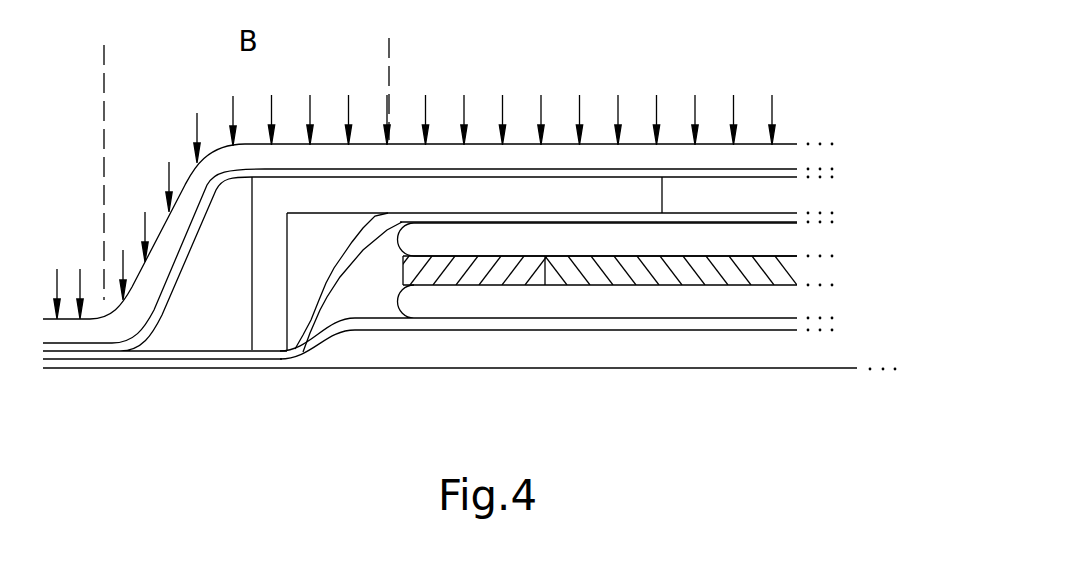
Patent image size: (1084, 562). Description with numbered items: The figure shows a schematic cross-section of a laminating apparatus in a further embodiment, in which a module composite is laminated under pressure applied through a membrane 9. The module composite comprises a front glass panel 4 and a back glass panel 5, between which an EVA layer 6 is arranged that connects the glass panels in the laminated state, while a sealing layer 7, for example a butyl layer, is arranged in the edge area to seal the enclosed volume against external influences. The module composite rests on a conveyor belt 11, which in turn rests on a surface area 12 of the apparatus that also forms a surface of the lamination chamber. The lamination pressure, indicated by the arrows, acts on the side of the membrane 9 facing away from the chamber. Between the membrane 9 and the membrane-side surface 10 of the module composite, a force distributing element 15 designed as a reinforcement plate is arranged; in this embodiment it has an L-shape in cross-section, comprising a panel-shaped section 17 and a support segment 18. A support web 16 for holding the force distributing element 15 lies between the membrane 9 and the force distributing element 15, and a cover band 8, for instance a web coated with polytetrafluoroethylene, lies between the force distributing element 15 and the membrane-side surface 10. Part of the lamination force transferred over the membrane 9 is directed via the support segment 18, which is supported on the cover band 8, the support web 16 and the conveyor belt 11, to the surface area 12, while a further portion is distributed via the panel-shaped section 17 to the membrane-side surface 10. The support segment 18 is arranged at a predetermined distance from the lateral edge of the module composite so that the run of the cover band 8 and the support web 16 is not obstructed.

The front glass panel 4 is at (588, 300).
The back glass panel 5 is at (513, 243).
The EVA layer 6 is at (747, 273).
The sealing layer 7 is at (475, 277).
The cover band 8 is at (727, 218).
The membrane 9 is at (437, 155).
The membrane-side surface 10 is at (685, 223).
The conveyor belt 11 is at (645, 327).
The surface area 12 is at (374, 369).
The force distributing element 15 is at (587, 187).
The support web 16 is at (477, 173).
The panel-shaped section 17 is at (542, 188).
The support segment 18 is at (262, 285).